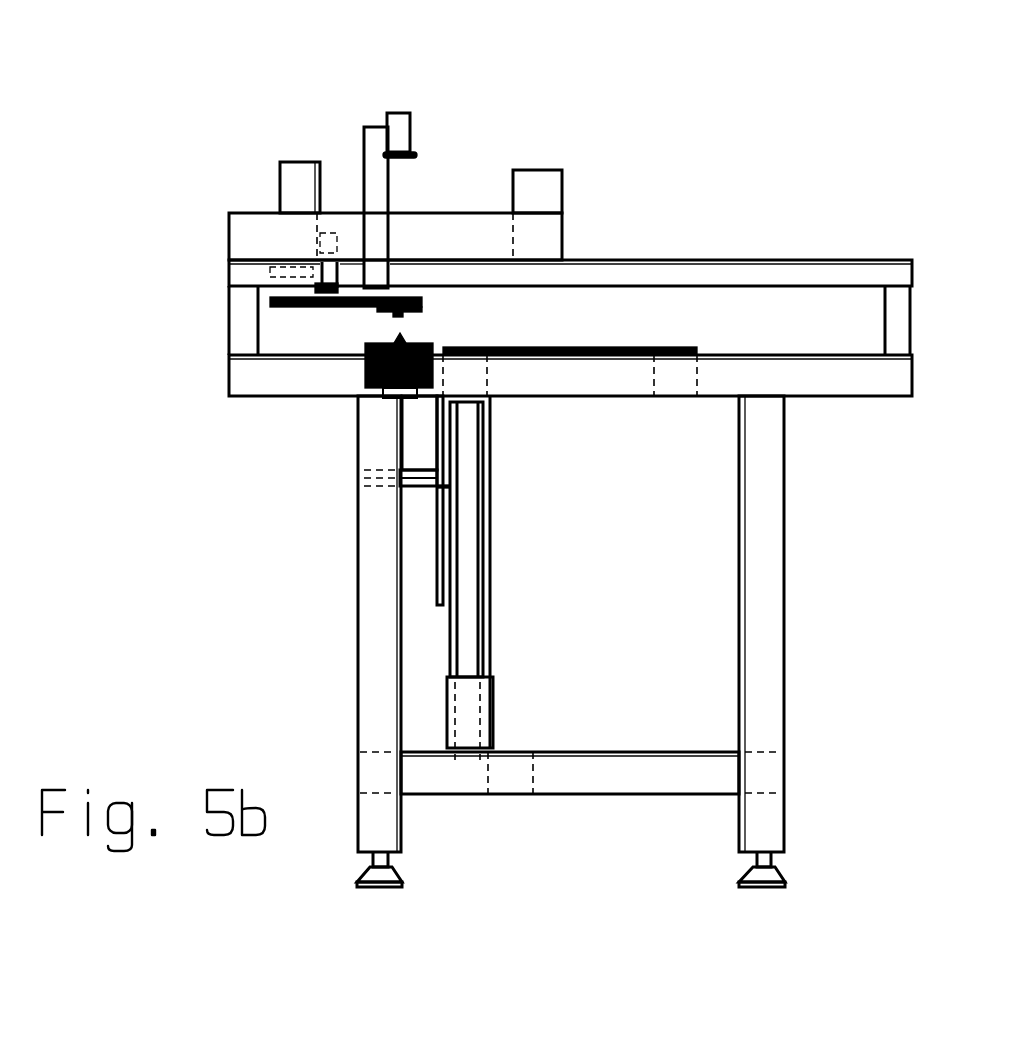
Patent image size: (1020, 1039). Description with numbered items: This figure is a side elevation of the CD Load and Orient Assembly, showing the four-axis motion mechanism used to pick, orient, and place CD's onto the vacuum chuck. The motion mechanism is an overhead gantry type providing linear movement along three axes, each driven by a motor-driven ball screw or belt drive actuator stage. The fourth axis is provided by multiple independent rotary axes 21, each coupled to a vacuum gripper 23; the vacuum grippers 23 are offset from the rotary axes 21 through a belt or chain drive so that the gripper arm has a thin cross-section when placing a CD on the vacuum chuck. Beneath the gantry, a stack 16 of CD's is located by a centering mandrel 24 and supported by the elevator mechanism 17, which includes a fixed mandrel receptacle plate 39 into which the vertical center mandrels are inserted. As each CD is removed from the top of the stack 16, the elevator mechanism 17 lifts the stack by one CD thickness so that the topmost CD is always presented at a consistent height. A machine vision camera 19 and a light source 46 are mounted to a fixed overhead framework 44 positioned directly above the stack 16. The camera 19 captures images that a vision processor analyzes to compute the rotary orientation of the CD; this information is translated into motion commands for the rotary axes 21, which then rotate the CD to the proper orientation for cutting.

The stack of CD's 16 is at (365, 347).
The elevator mechanism 17 is at (468, 612).
The machine vision camera 19 is at (400, 123).
The rotary axis 21 is at (287, 277).
The vacuum gripper 23 is at (407, 310).
The centering mandrel 24 is at (400, 440).
The mandrel receptacle plate 39 is at (420, 490).
The fixed overhead framework 44 is at (372, 197).
The light source 46 is at (415, 152).